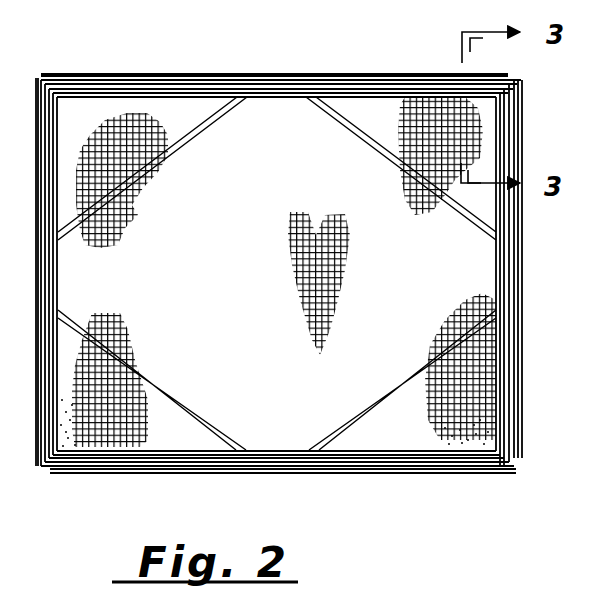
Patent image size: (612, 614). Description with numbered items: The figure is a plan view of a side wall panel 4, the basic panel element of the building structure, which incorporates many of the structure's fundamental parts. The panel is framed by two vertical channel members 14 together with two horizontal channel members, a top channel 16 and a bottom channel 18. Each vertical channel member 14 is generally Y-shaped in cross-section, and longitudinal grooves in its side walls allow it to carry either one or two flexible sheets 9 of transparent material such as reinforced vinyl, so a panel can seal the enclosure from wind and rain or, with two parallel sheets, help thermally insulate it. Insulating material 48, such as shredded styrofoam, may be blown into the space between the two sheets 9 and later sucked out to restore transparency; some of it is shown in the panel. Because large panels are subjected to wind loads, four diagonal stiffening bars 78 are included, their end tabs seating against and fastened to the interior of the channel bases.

The side wall panel 4 is at (278, 424).
The sheets of transparent material 9 is at (472, 365).
The vertical channel member 14 is at (42, 112).
The top channel 16 is at (284, 82).
The bottom channel 18 is at (364, 470).
The insulating material 48 is at (87, 433).
The diagonal stiffening bars 78 is at (156, 382).